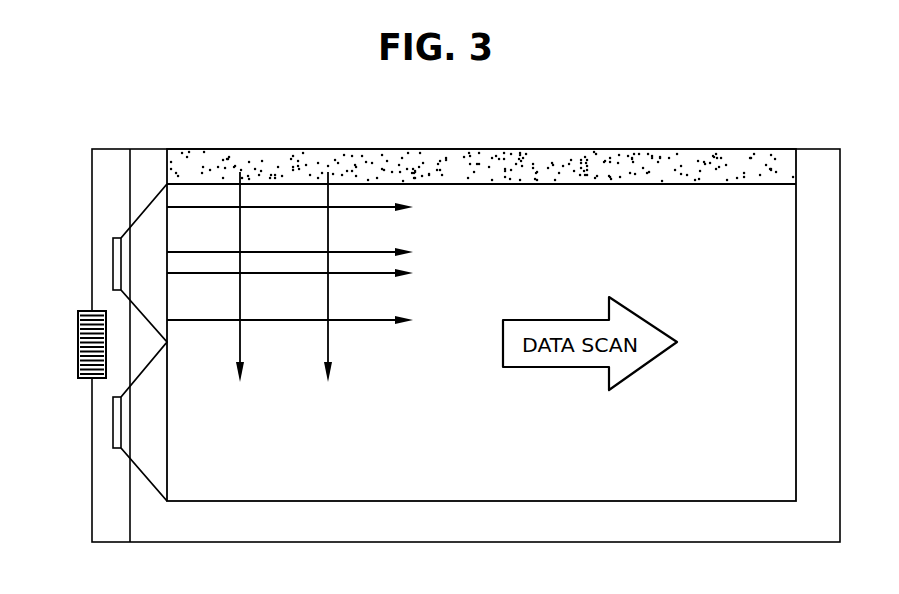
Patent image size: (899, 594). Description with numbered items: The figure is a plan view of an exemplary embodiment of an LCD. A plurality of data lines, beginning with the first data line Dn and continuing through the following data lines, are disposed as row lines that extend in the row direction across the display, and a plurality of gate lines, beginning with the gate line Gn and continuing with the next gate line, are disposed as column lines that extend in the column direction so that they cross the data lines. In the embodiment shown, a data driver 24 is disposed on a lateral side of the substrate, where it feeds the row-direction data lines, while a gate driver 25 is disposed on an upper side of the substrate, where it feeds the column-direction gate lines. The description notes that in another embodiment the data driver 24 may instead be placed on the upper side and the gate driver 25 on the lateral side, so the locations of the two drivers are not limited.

The data driver 24 is at (113, 258).
The gate driver 25 is at (553, 167).
The first gate line Gn is at (240, 172).
The first data line Dn is at (385, 203).